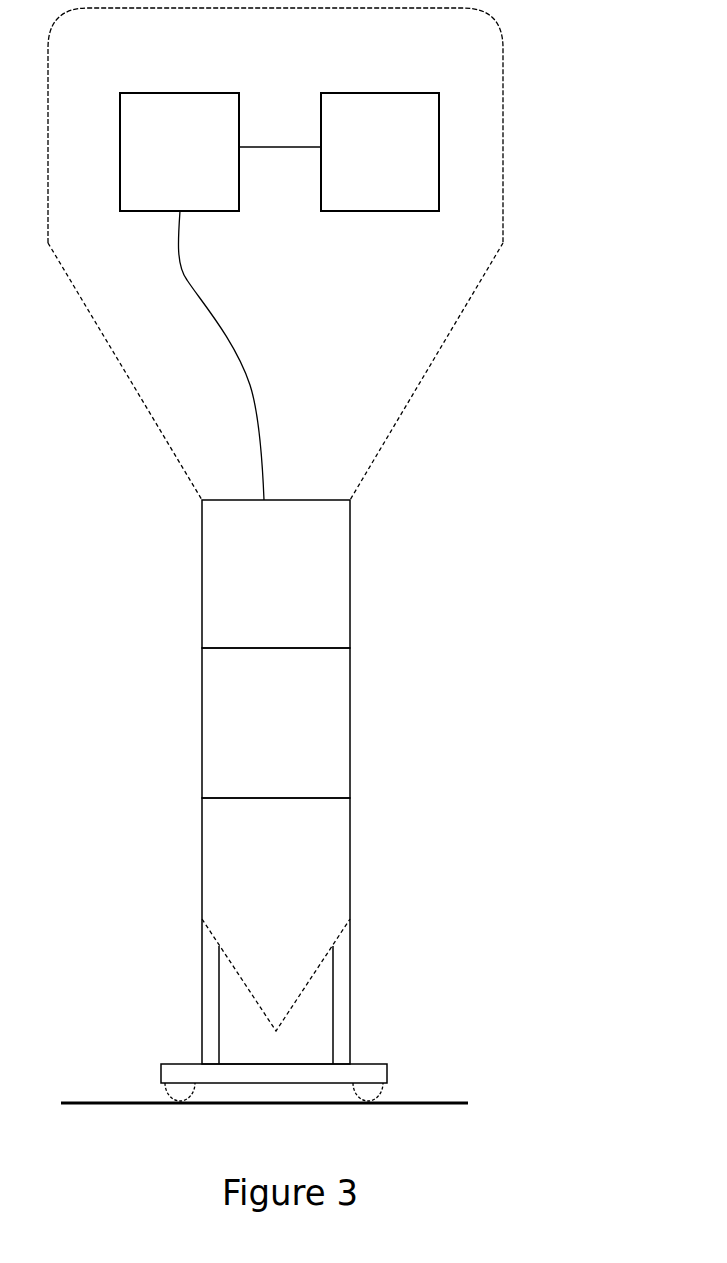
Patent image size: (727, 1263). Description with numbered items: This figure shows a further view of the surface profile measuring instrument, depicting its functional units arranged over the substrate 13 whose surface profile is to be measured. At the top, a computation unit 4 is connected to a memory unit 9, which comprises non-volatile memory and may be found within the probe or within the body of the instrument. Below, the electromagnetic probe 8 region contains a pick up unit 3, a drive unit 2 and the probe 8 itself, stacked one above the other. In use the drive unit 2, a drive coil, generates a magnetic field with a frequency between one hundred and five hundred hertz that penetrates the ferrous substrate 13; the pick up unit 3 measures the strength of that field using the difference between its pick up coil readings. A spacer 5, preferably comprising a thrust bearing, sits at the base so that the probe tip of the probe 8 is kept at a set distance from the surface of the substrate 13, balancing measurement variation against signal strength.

The drive unit 2 is at (276, 723).
The pick up unit 3 is at (276, 574).
The computation unit 4 is at (179, 152).
The spacer 5 is at (187, 1067).
The electromagnetic probe 8 is at (276, 931).
The memory unit 9 is at (380, 152).
The substrate 13 is at (423, 1099).